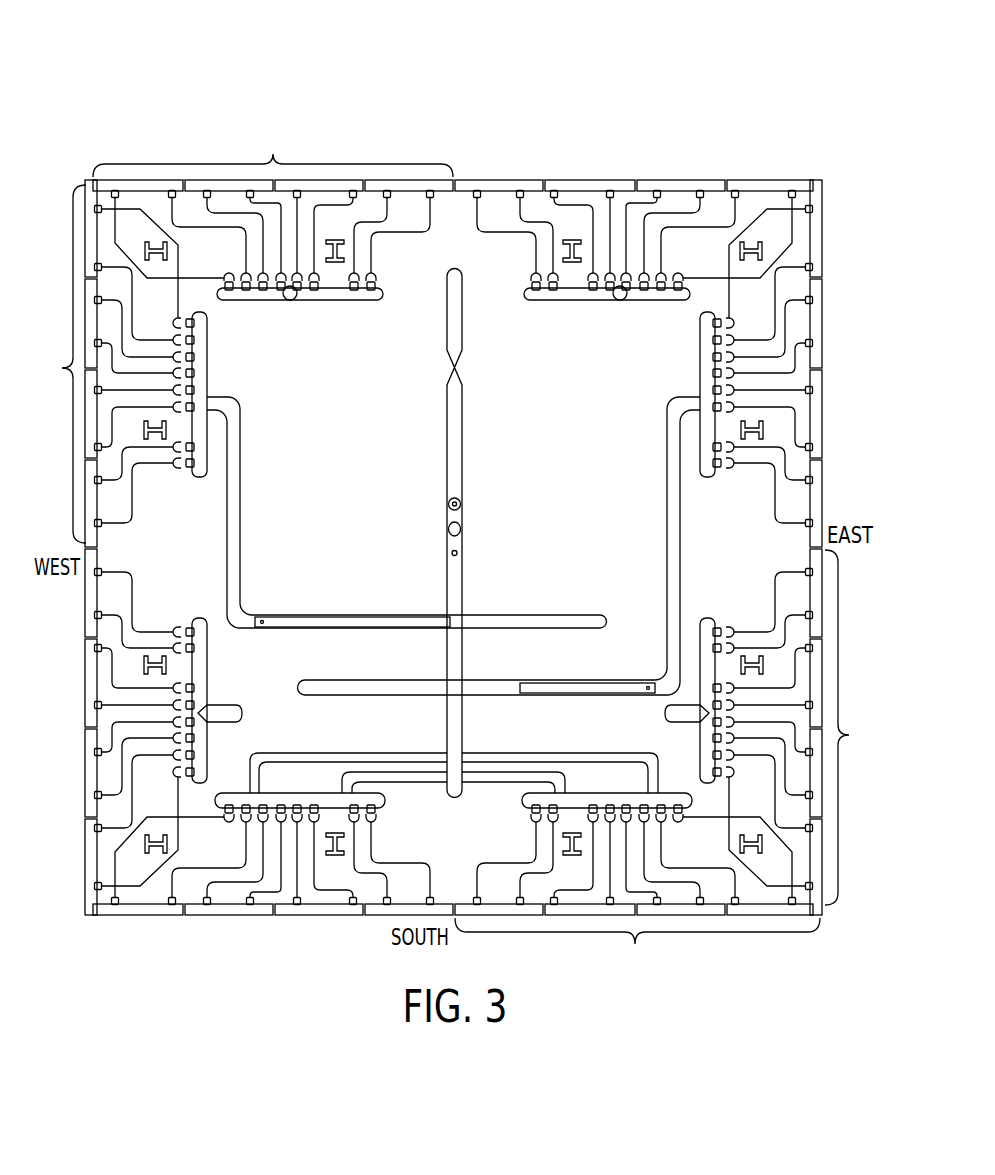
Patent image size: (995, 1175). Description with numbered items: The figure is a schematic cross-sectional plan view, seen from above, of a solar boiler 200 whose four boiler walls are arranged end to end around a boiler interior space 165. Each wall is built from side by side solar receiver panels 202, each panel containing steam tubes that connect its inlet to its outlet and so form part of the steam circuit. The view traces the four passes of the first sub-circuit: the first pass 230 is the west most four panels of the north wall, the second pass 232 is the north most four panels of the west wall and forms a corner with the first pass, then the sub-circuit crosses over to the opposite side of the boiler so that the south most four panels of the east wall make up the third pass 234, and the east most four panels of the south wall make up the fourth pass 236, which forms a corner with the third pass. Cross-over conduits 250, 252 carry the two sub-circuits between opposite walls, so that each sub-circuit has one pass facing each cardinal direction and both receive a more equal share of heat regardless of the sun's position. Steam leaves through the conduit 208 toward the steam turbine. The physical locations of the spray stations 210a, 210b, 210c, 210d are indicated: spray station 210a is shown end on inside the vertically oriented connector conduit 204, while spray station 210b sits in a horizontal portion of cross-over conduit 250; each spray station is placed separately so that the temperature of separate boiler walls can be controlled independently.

The solar boiler 200 is at (453, 465).
The panels 202 is at (410, 181).
The connector conduit 204 is at (286, 299).
The conduit 208 is at (463, 726).
The spray station 210a is at (301, 311).
The spray station 210b is at (380, 612).
The spray station 210c is at (615, 680).
The spray station 210d is at (609, 311).
The first pass 230 is at (273, 143).
The second pass 232 is at (52, 364).
The third pass 234 is at (857, 727).
The fourth pass 236 is at (637, 959).
The cross-over conduit 250 is at (242, 500).
The cross-over conduit 252 is at (668, 500).
The boiler interior space 165 is at (506, 497).